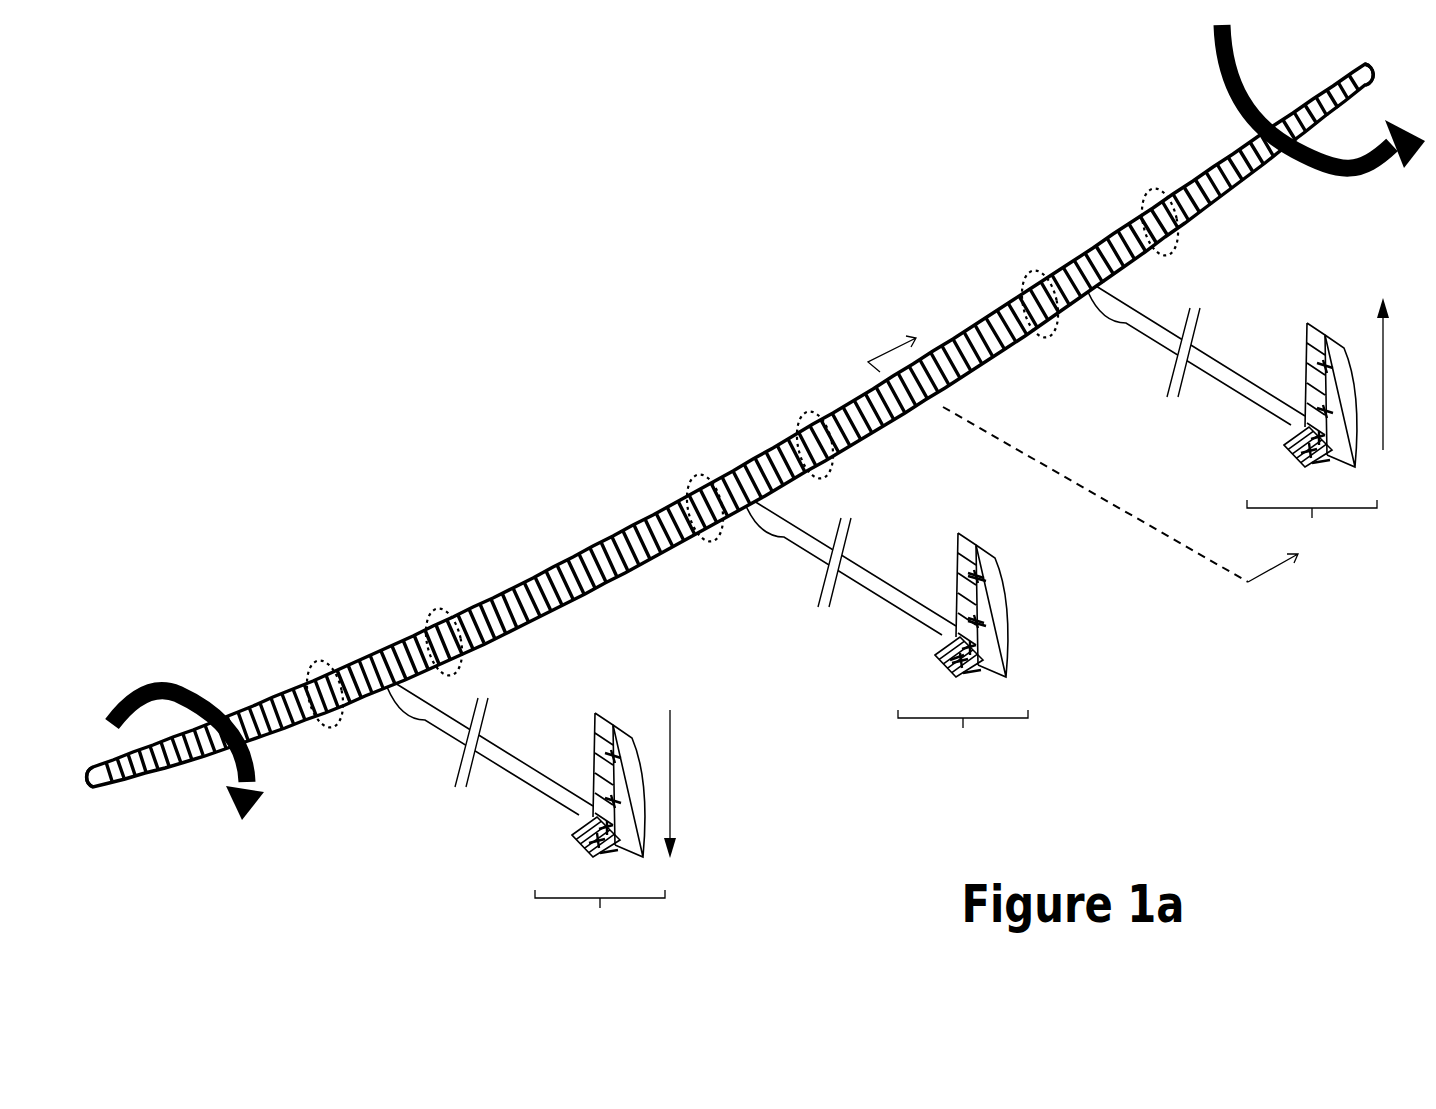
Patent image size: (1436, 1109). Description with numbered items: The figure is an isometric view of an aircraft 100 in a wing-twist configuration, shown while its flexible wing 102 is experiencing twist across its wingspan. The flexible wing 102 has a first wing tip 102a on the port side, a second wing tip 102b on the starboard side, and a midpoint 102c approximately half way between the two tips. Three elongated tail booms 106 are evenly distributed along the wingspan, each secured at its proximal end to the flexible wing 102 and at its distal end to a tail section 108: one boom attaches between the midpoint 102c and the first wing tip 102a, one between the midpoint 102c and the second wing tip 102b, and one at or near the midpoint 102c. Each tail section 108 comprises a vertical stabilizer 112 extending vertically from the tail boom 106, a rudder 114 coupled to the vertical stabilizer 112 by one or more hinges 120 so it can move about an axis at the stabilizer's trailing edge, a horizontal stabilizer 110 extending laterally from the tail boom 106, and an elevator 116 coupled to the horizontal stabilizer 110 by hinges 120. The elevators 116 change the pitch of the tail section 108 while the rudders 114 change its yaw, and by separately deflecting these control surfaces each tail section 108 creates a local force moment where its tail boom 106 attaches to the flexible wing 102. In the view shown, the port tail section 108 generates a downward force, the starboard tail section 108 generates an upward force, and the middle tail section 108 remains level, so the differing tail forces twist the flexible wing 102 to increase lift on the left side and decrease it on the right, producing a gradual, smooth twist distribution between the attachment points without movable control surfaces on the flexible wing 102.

The aircraft 100 is at (258, 106).
The flexible wing 102 is at (533, 578).
The first wing tip 102a is at (108, 788).
The second wing tip 102b is at (1350, 62).
The midpoint 102c is at (728, 480).
The tail boom 106 is at (533, 793).
The tail section 108 is at (956, 718).
The horizontal stabilizer 110 is at (573, 835).
The vertical stabilizer 112 is at (598, 712).
The rudder 114 is at (632, 737).
The elevator 116 is at (607, 857).
The hinge 120 is at (1005, 628).